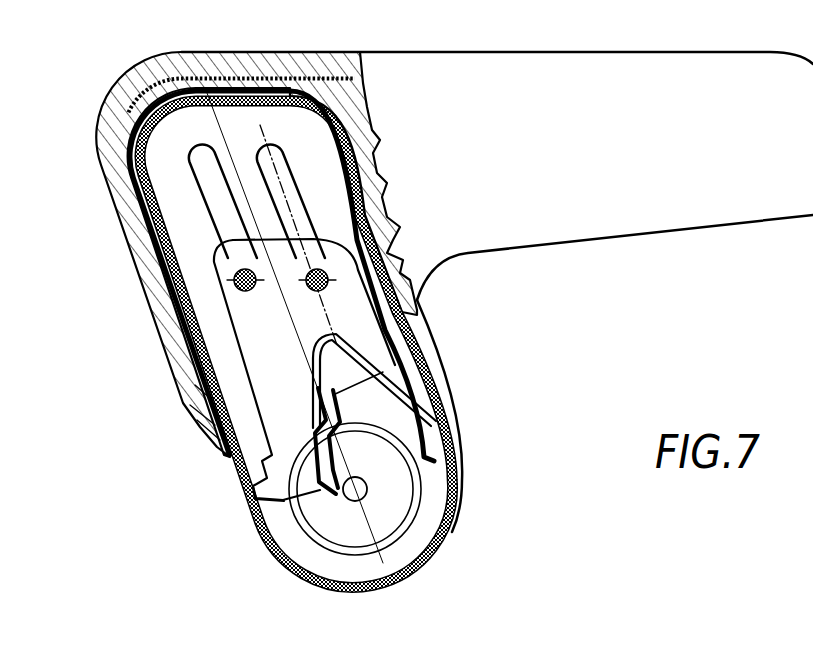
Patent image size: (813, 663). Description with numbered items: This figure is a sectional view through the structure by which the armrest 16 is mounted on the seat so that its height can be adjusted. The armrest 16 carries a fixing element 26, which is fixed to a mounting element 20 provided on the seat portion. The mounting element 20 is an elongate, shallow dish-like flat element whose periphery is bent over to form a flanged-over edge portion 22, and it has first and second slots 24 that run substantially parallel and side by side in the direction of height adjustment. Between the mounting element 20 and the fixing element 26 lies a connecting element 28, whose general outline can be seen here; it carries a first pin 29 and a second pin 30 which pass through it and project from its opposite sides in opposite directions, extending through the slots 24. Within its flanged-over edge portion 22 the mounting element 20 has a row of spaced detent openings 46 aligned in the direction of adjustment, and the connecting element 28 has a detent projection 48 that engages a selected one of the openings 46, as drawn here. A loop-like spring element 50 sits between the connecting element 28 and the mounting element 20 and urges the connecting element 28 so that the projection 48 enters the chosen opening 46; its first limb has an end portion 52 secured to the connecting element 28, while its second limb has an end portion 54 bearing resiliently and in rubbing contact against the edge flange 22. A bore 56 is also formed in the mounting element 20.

The armrest 16 is at (695, 172).
The mounting element 20 is at (409, 547).
The flanged-over edge portion 22 is at (286, 563).
The slots 24 is at (257, 157).
The fixing element 26 is at (150, 86).
The connecting element 28 is at (303, 404).
The first pin 29 is at (255, 292).
The second pin 30 is at (332, 312).
The openings 46 is at (200, 428).
The projection 48 is at (253, 497).
The spring element 50 is at (433, 457).
The end portion of first limb 52 is at (190, 128).
The end portion of second limb 54 is at (420, 390).
The bore 56 is at (470, 416).